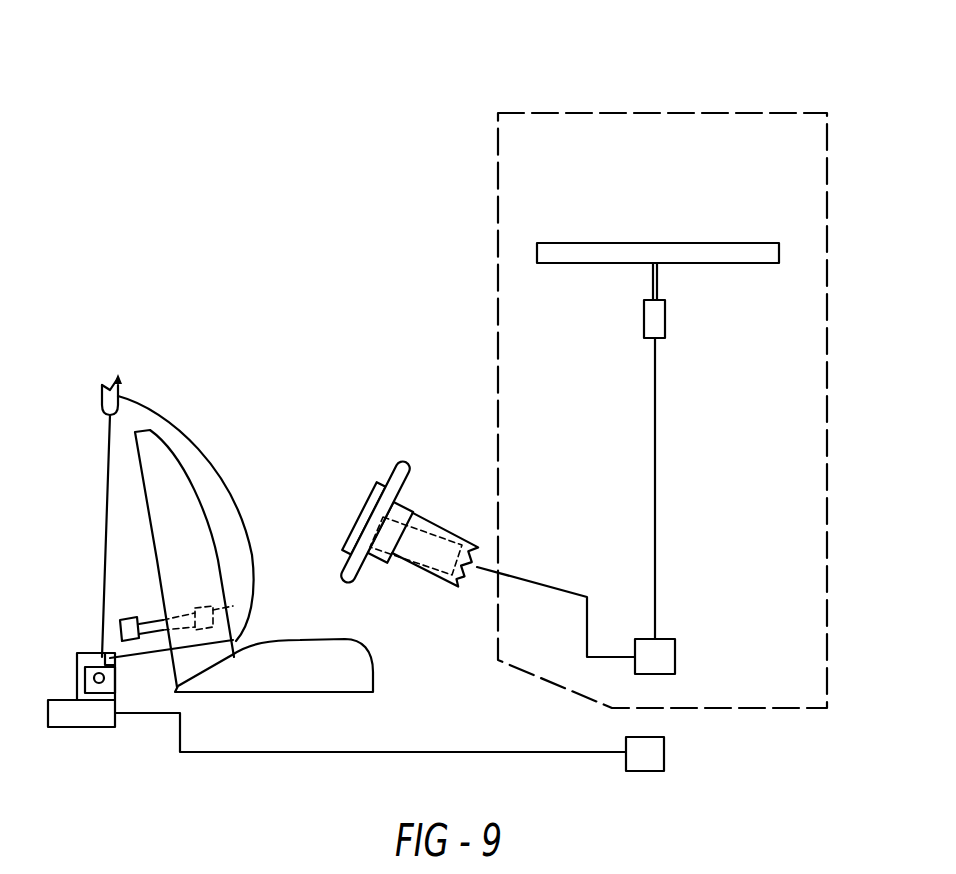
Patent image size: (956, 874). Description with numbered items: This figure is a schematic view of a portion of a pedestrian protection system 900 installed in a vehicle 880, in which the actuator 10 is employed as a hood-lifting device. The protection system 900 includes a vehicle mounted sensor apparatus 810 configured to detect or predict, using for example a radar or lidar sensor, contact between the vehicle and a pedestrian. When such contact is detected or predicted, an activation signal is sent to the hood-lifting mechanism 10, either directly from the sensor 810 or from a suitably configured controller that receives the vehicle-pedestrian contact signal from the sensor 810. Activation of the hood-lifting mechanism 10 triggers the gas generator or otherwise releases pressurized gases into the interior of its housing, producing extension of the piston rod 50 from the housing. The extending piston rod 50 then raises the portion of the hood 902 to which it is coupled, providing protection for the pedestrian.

The vehicle 880 is at (280, 150).
The pedestrian protection system 900 is at (700, 105).
The hood 902 is at (680, 243).
The piston rod 50 is at (657, 281).
The actuator 10 is at (644, 318).
The sensor apparatus 810 is at (675, 657).